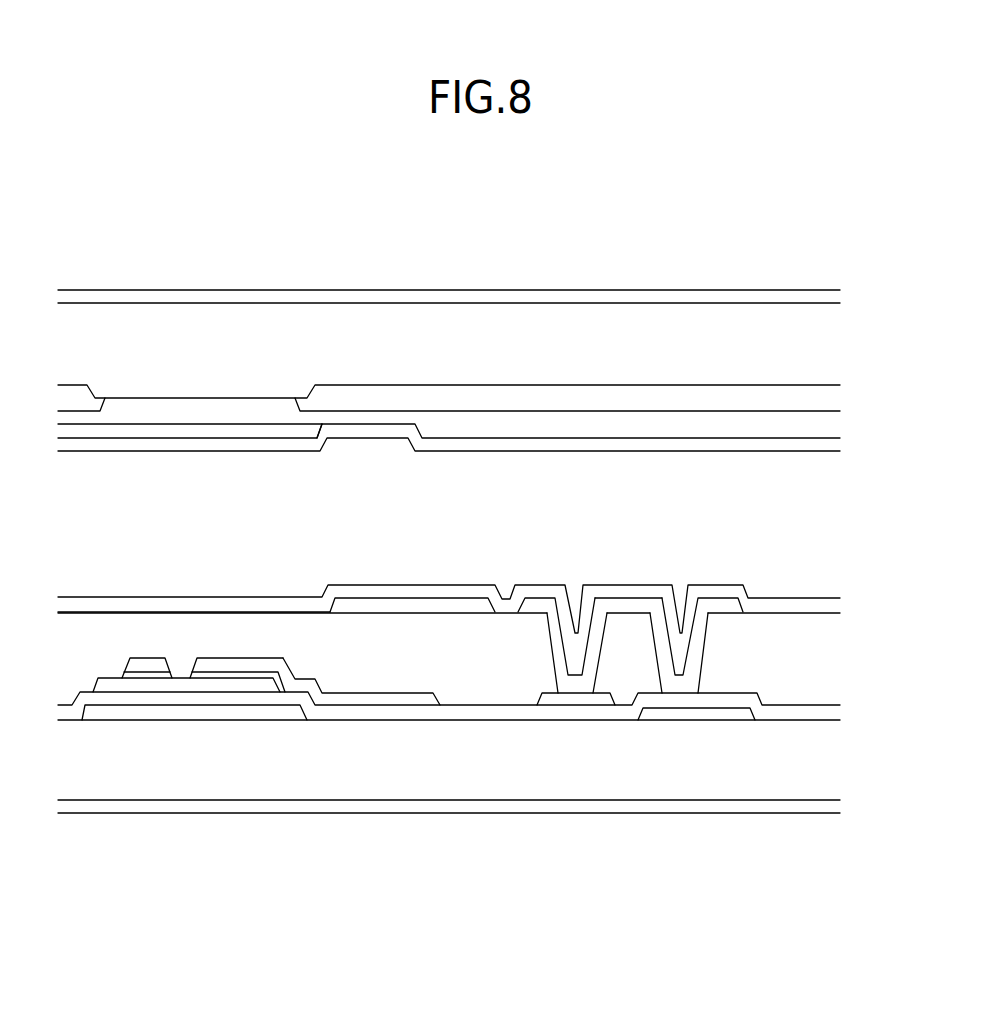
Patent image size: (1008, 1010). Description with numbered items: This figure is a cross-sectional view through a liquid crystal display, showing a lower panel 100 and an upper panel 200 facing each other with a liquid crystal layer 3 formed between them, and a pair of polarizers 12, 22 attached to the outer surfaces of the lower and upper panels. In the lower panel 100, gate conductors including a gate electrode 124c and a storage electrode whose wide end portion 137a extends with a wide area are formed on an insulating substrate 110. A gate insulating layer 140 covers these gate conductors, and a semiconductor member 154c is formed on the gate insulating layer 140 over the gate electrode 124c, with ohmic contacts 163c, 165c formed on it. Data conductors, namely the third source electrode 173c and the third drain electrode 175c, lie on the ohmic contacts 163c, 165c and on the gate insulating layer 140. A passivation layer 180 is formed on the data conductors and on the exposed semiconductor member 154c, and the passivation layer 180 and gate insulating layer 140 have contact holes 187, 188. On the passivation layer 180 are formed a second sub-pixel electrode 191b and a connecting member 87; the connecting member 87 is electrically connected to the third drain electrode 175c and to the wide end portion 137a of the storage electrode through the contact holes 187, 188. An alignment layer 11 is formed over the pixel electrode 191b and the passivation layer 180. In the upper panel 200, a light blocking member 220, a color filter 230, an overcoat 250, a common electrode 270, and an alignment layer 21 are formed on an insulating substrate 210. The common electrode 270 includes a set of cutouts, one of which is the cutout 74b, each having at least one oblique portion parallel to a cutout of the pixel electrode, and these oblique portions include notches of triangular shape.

The polarizer 22 is at (823, 302).
The upper panel 200 is at (845, 306).
The insulating substrate 210 is at (436, 322).
The light blocking member 220 is at (242, 393).
The color filter 230 is at (522, 398).
The overcoat 250 is at (175, 412).
The common electrode 270 is at (225, 432).
The cutout 74b is at (322, 424).
The alignment layer 21 is at (507, 443).
The liquid crystal layer 3 is at (845, 437).
The lower panel 100 is at (845, 588).
The alignment layer 11 is at (463, 592).
The second sub-pixel electrode 191b is at (414, 607).
The connecting member 87 is at (627, 608).
The passivation layer 180 is at (488, 678).
The contact hole 187 is at (553, 642).
The contact hole 188 is at (698, 640).
The third source electrode 173c is at (218, 670).
The ohmic contact 163c is at (253, 673).
The third drain electrode 175c is at (158, 670).
The ohmic contact 165c is at (140, 673).
The semiconductor member 154c is at (167, 683).
The gate insulating layer 140 is at (347, 698).
The gate electrode 124c is at (222, 710).
The wide end portion 137a is at (706, 710).
The insulating substrate 110 is at (428, 780).
The polarizer 12 is at (823, 811).